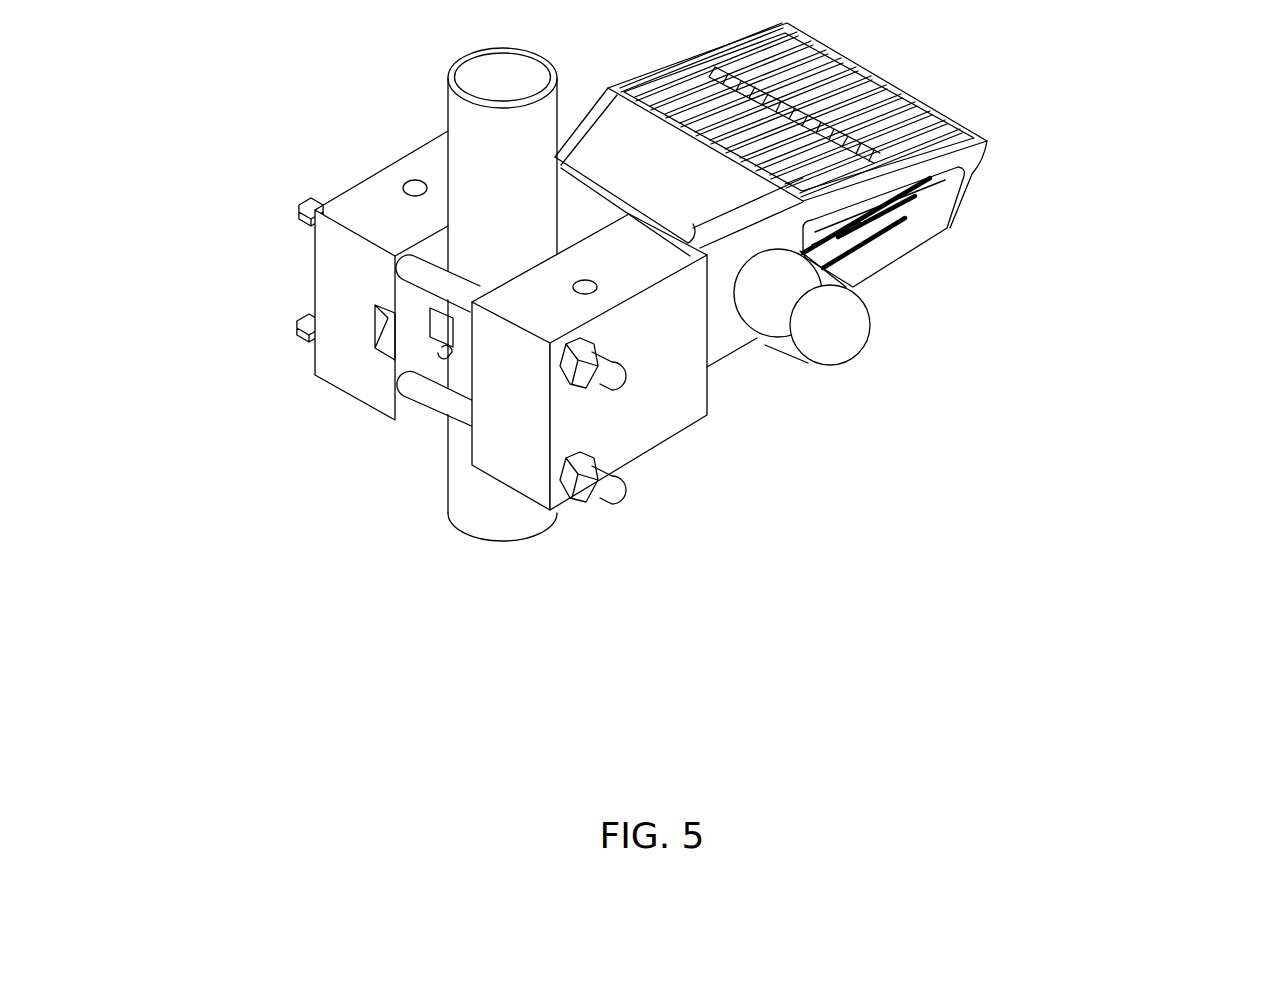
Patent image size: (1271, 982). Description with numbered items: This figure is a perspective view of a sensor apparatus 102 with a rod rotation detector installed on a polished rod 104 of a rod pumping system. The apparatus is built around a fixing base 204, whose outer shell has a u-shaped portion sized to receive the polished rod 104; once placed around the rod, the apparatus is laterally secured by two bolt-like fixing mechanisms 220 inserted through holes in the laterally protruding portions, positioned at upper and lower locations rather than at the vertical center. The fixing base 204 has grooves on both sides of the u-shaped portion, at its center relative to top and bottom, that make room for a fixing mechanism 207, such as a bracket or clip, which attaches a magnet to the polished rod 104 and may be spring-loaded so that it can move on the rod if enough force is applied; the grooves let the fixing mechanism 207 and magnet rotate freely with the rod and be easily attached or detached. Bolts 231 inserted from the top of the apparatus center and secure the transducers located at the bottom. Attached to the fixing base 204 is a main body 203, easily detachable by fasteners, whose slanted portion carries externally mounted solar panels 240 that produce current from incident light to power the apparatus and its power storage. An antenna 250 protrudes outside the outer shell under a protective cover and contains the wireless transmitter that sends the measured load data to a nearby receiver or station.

The sensor apparatus 102 is at (130, 388).
The polished rod 104 is at (527, 127).
The main body 203 is at (888, 320).
The fixing base 204 is at (622, 410).
The fixing mechanism 207 is at (442, 357).
The fixing mechanisms 220 is at (307, 345).
The bolts 231 is at (583, 279).
The solar panels 240 is at (950, 230).
The antenna 250 is at (853, 330).